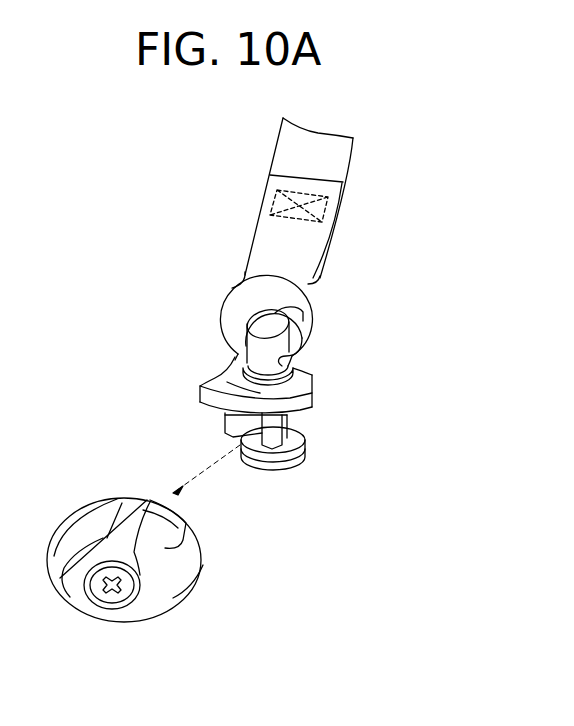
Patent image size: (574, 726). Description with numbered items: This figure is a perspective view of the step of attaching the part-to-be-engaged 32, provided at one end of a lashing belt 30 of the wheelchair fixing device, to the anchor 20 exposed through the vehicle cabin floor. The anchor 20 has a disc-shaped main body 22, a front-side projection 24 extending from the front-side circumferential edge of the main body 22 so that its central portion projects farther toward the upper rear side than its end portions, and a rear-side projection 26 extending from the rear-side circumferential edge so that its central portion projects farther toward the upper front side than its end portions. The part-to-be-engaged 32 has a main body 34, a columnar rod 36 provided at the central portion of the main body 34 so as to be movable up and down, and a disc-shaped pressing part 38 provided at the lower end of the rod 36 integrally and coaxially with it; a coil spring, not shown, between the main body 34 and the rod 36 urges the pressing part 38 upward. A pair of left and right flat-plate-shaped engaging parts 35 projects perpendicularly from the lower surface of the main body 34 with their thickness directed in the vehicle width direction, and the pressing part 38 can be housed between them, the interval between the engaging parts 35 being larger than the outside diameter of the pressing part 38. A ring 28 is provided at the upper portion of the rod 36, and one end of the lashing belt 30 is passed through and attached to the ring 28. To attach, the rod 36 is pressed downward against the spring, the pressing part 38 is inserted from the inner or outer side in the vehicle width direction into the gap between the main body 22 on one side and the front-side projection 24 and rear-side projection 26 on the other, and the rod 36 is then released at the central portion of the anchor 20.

The anchor 20 is at (63, 513).
The main body 22 is at (67, 598).
The front-side projection 24 is at (107, 522).
The rear-side projection 26 is at (170, 537).
The ring 28 is at (233, 310).
The lashing belt 30 is at (337, 157).
The part-to-be-engaged 32 is at (318, 361).
The main body 34 is at (230, 372).
The engaging parts 35 is at (315, 407).
The rod 36 is at (272, 333).
The pressing part 38 is at (302, 452).